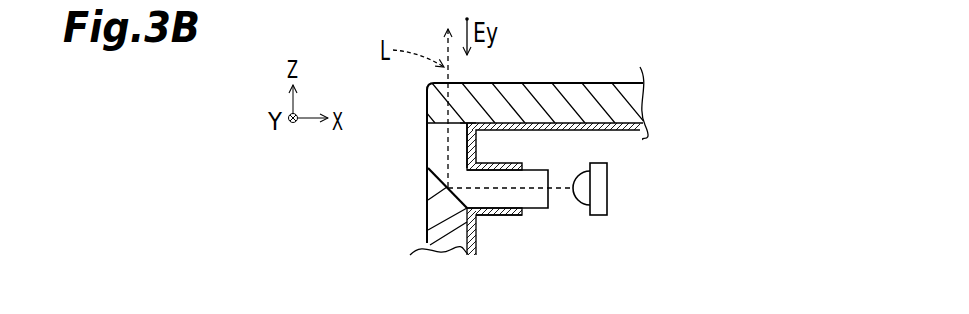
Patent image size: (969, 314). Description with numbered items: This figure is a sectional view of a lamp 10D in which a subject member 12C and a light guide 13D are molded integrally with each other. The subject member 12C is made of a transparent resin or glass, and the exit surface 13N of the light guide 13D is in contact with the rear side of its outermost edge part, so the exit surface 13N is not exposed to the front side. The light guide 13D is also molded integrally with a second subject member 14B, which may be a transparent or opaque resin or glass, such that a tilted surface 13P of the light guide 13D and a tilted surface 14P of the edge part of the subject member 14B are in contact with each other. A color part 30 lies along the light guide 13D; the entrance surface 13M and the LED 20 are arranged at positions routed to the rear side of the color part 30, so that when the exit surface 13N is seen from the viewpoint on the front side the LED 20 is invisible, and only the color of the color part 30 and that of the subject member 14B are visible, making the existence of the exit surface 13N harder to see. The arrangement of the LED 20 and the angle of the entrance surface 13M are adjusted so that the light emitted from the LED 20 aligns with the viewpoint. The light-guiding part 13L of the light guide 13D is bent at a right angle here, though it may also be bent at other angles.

The lamp 10D is at (556, 42).
The subject member 12C is at (592, 95).
The exit surface 13N is at (456, 119).
The light-guiding part 13L is at (436, 146).
The tilted surface 14P is at (439, 174).
The subject member 14B is at (426, 220).
The tilted surface 13P is at (451, 201).
The color part 30 is at (618, 133).
The light guide 13D is at (529, 213).
The entrance surface 13M is at (549, 199).
The LED 20 is at (609, 191).